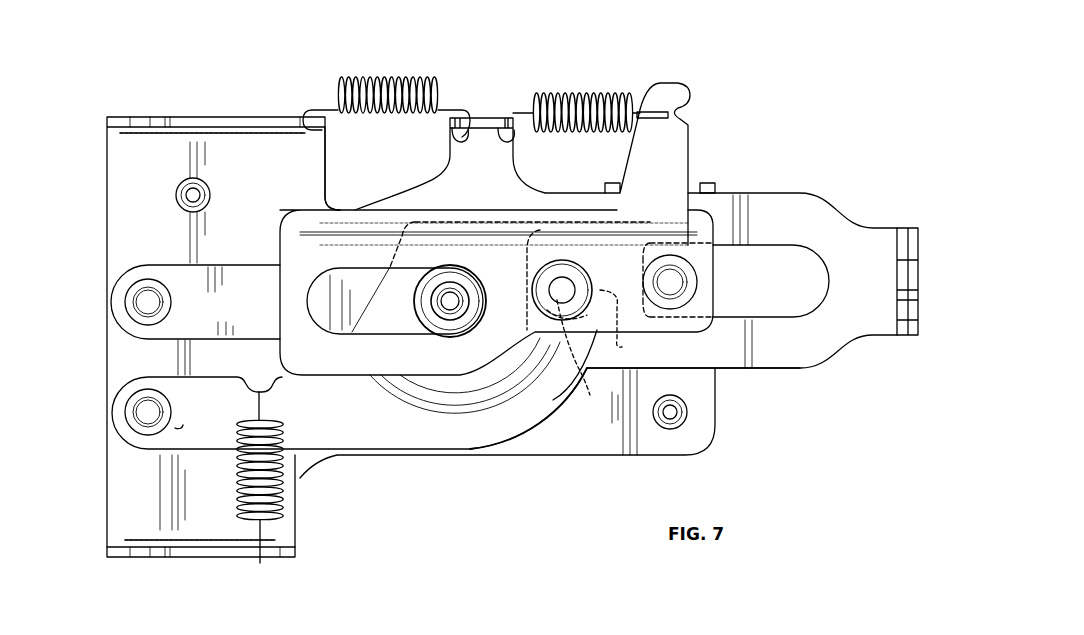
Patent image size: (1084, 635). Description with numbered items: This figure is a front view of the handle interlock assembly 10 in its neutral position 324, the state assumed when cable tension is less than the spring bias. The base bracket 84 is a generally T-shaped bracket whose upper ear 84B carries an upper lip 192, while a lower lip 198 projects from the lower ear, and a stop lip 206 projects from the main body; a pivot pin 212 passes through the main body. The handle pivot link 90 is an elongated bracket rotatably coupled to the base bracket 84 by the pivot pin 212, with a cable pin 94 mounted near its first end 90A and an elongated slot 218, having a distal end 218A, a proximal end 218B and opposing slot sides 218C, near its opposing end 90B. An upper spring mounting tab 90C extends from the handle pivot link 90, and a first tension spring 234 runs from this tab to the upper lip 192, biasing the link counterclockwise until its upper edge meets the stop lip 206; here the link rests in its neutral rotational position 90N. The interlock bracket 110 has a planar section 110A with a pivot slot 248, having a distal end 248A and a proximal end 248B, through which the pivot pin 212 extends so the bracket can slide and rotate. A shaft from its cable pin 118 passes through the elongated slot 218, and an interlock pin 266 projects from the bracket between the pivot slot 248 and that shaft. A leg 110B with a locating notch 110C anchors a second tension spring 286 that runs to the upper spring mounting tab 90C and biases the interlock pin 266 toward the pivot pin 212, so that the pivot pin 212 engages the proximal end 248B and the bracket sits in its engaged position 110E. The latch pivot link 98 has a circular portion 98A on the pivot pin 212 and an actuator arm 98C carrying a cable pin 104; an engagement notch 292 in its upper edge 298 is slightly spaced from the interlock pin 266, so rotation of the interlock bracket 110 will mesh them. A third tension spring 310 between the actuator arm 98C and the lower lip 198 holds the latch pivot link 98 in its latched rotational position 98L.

The handle interlock assembly 10 is at (857, 92).
The base bracket 84 is at (104, 162).
The upper ear 84B is at (140, 228).
The handle pivot link 90 is at (846, 202).
The first end 90A is at (120, 306).
The opposing end 90B is at (922, 255).
The upper spring mounting tab 90C is at (481, 122).
The neutral rotational position 90N is at (823, 194).
The cable pin 94 is at (145, 300).
The latch pivot link 98 is at (407, 448).
The circular portion 98A is at (485, 388).
The actuator arm 98C is at (183, 430).
The latched rotational position 98L is at (545, 422).
The cable pin 104 is at (145, 410).
The interlock bracket 110 is at (344, 207).
The planar section 110A is at (305, 258).
The leg 110B is at (666, 155).
The locating notch 110C is at (680, 103).
The engaged position 110E is at (415, 207).
The cable pin 118 is at (672, 280).
The upper lip 192 is at (216, 120).
The lower lip 198 is at (185, 558).
The stop lip 206 is at (710, 186).
The pivot pin 212 is at (456, 307).
The elongated slot 218 is at (800, 320).
The distal end 218A is at (822, 297).
The proximal end 218B is at (647, 164).
The slot sides 218C is at (768, 256).
The first tension spring 234 is at (386, 72).
The pivot slot 248 is at (380, 340).
The distal end 248A is at (320, 304).
The proximal end 248B is at (468, 272).
The interlock pin 266 is at (560, 285).
The second tension spring 286 is at (583, 91).
The engagement notch 292 is at (617, 364).
The upper edge 298 is at (620, 346).
The third tension spring 310 is at (283, 487).
The neutral position 324 is at (855, 132).